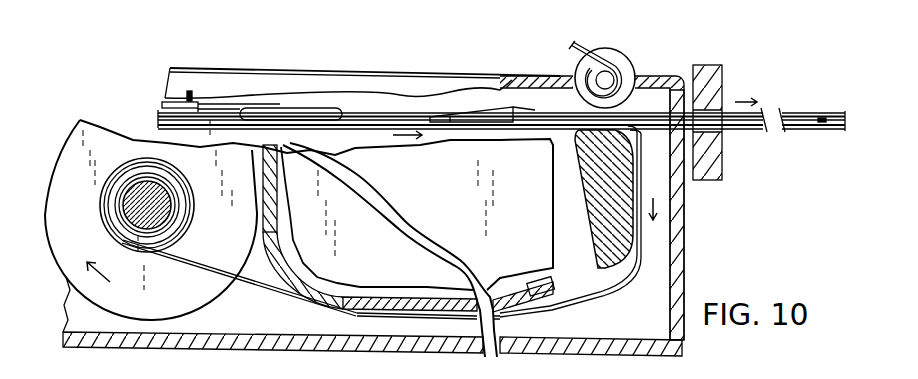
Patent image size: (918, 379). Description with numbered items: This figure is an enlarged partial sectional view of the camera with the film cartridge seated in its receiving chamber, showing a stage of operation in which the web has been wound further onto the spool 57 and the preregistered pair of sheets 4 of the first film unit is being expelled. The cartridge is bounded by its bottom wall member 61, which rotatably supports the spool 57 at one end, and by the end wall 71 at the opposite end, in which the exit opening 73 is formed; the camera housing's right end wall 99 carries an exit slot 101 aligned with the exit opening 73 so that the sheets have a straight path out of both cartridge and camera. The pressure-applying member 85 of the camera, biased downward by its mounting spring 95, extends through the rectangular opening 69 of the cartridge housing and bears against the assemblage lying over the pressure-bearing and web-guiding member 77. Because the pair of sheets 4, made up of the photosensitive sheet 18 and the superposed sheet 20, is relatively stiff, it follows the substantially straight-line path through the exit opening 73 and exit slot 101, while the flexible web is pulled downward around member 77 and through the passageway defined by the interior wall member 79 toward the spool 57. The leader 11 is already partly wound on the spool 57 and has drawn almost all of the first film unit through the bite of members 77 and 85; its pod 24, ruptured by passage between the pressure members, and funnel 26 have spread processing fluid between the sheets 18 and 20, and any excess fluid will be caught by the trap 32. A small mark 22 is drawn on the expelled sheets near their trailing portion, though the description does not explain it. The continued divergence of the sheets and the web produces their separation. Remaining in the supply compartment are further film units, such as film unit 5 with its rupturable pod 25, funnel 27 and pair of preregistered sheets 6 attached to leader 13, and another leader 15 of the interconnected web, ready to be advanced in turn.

The preregistered pair of sheets 4 is at (780, 115).
The film unit 5 is at (198, 95).
The pair of preregistered sheets 6 is at (188, 92).
The leader 11 is at (623, 273).
The leader 13 is at (370, 297).
The leader 15 is at (338, 128).
The sheet 18 is at (815, 128).
The sheet 20 is at (803, 115).
The splice mark 22 is at (823, 115).
The pod 24 is at (360, 313).
The rupturable pod 25 is at (303, 108).
The funnel 26 is at (450, 320).
The funnel 27 is at (237, 109).
The trap 32 is at (497, 108).
The spool 57 is at (130, 213).
The bottom wall member 61 is at (568, 343).
The rectangular opening 69 is at (643, 76).
The end wall 71 is at (682, 238).
The exit opening 73 is at (673, 128).
The pressure-bearing and web-guiding member 77 is at (578, 165).
The interior wall member 79 is at (533, 283).
The pressure-applying member 85 is at (618, 60).
The mounting spring 95 is at (580, 47).
The right end wall 99 is at (723, 78).
The exit slot 101 is at (722, 133).